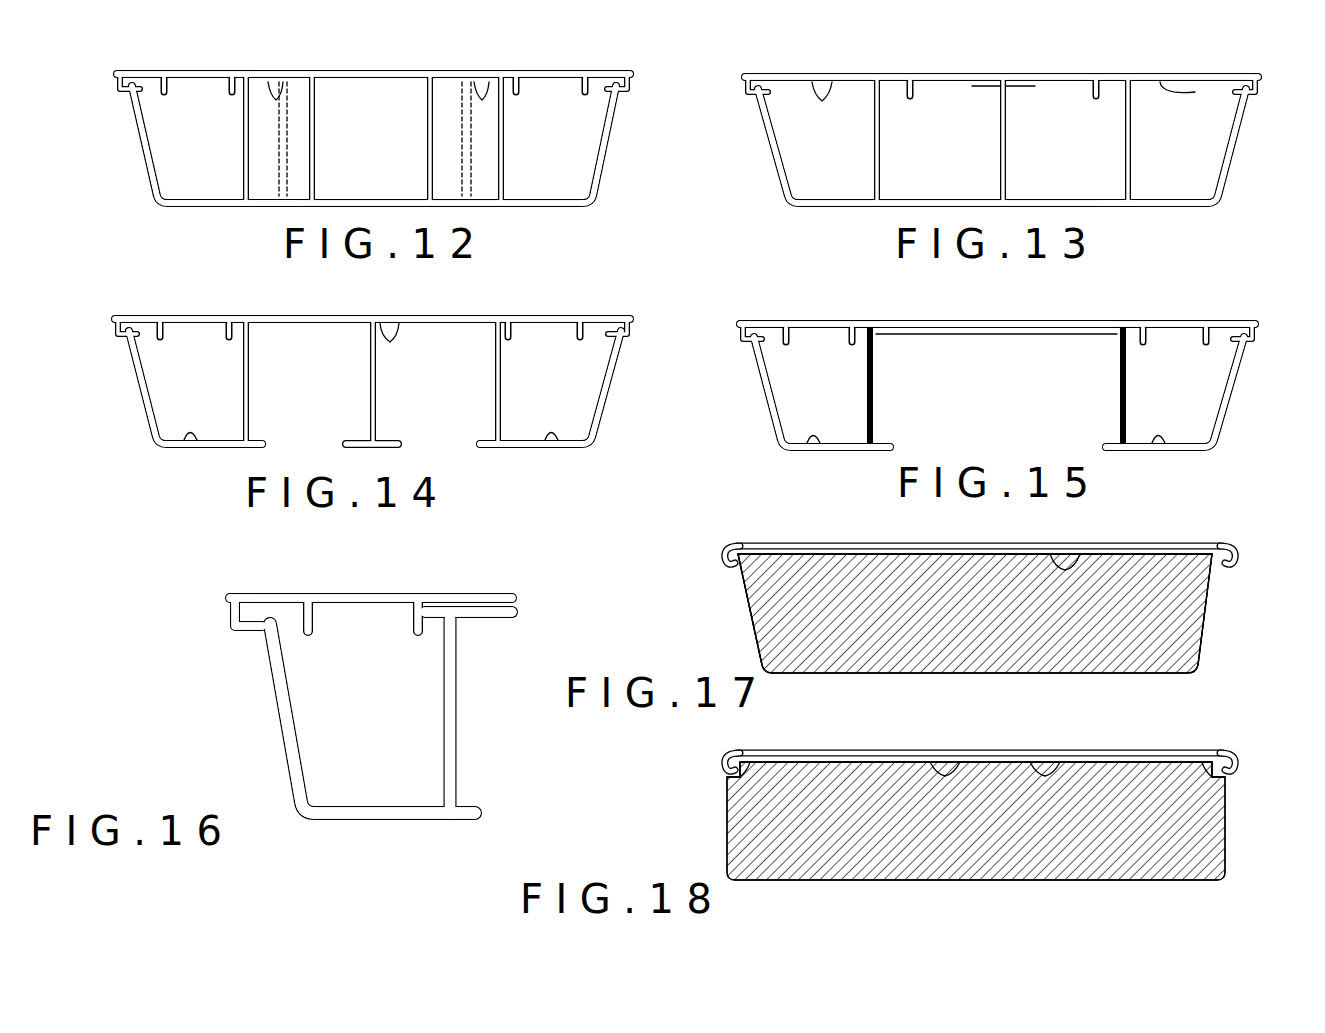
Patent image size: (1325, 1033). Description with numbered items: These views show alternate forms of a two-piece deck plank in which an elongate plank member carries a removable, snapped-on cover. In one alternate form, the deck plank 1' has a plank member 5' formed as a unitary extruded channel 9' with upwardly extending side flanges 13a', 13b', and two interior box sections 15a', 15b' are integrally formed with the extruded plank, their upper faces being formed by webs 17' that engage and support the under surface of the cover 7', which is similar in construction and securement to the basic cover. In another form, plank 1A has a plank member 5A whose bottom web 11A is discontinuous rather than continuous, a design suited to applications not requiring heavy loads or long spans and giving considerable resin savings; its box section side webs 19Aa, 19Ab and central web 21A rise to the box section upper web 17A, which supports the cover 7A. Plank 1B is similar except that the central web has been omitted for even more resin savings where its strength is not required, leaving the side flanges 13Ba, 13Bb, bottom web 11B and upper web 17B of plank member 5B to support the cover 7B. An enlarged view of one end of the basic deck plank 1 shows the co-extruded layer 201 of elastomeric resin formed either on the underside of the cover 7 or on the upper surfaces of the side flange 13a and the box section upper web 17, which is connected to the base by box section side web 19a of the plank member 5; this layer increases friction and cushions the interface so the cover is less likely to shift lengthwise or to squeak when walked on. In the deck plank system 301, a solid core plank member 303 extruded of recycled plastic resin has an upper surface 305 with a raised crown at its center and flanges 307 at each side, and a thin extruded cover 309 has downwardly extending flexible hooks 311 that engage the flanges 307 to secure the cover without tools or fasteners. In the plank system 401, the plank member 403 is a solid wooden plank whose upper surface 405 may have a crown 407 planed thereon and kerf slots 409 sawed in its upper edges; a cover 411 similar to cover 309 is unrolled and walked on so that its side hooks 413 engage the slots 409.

In FIG. 12, the deck plank 1' is at (356, 112).
In FIG. 12, the cover 7' is at (373, 43).
In FIG. 12, the left side wall 13a' is at (120, 144).
In FIG. 14, the left side wall 13a' is at (117, 387).
In FIG. 12, the right side wall 13b' is at (619, 144).
In FIG. 14, the right side wall 13b' is at (615, 387).
In FIG. 12, the base 5' is at (375, 223).
In FIG. 12, the bottom flange 9' is at (229, 223).
In FIG. 12, the interior box section 15a' is at (166, 138).
In FIG. 12, the interior box section 15b' is at (538, 155).
In FIG. 12, the web 17' is at (385, 116).
In FIG. 14, the plank 1A is at (120, 315).
In FIG. 14, the top plate 7A is at (400, 317).
In FIG. 14, the base 5A is at (152, 446).
In FIG. 14, the bottom web 11A is at (191, 428).
In FIG. 14, the web 19Aa is at (249, 392).
In FIG. 14, the central web 21A is at (376, 384).
In FIG. 14, the web 19Ab is at (490, 383).
In FIG. 14, the channel 17A is at (390, 331).
In FIG. 15, the plank 1B is at (757, 319).
In FIG. 15, the top plate 7B is at (1188, 320).
In FIG. 15, the channel 17B is at (984, 336).
In FIG. 15, the left side wall 13Ba is at (768, 400).
In FIG. 15, the right side wall 13Bb is at (1226, 390).
In FIG. 15, the base 5B is at (1212, 434).
In FIG. 15, the bottom wall 11B is at (815, 430).
In FIG. 16, the deck plank 1 is at (340, 705).
In FIG. 16, the cover 7 is at (371, 568).
In FIG. 16, the co-extruded layer 201 is at (247, 600).
In FIG. 16, the box section upper web 17 is at (479, 631).
In FIG. 16, the side flange 13a is at (243, 718).
In FIG. 16, the box section side web 19a is at (458, 677).
In FIG. 16, the plank member 5 is at (392, 835).
In FIG. 17, the deck plank system 301 is at (722, 532).
In FIG. 17, the solid core plank member 303 is at (1208, 618).
In FIG. 17, the upper surface 305 is at (1066, 553).
In FIG. 17, the flange 307 is at (736, 563).
In FIG. 17, the cover 309 is at (866, 542).
In FIG. 17, the flexible hook 311 is at (721, 558).
In FIG. 18, the plank system 401 is at (715, 750).
In FIG. 18, the plank member 403 is at (1232, 831).
In FIG. 18, the upper surface 405 is at (1045, 757).
In FIG. 18, the crown 407 is at (944, 754).
In FIG. 18, the kerf slot 409 is at (750, 780).
In FIG. 18, the cover 411 is at (1118, 748).
In FIG. 18, the side hook 413 is at (719, 764).